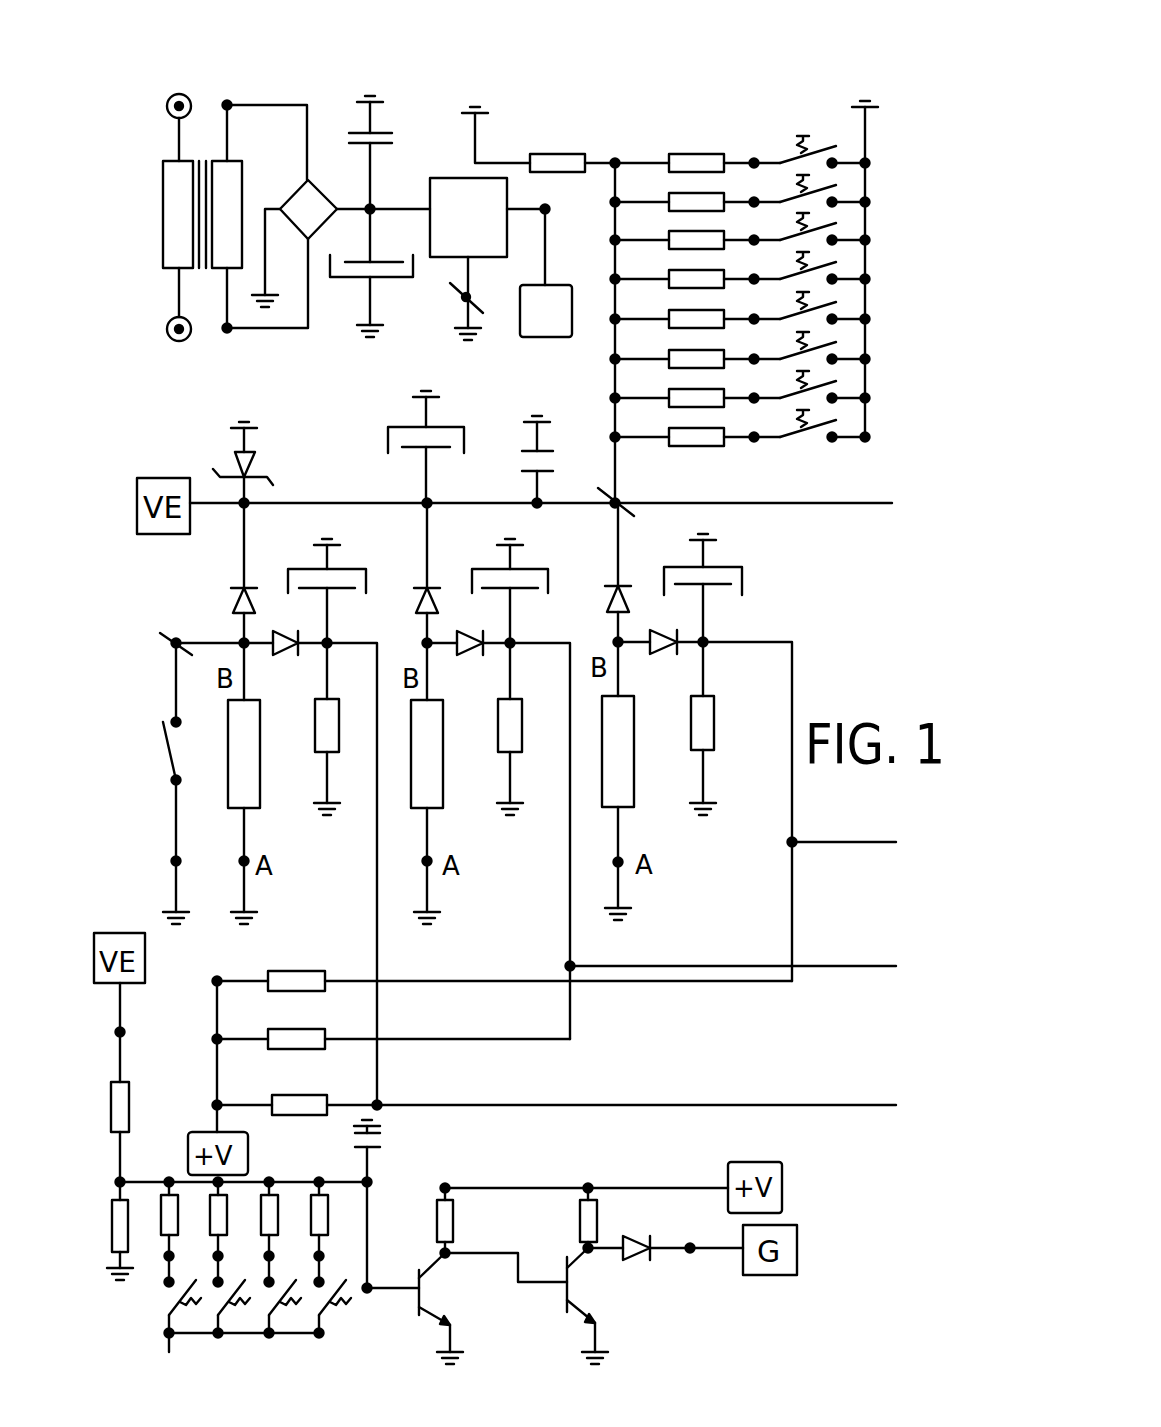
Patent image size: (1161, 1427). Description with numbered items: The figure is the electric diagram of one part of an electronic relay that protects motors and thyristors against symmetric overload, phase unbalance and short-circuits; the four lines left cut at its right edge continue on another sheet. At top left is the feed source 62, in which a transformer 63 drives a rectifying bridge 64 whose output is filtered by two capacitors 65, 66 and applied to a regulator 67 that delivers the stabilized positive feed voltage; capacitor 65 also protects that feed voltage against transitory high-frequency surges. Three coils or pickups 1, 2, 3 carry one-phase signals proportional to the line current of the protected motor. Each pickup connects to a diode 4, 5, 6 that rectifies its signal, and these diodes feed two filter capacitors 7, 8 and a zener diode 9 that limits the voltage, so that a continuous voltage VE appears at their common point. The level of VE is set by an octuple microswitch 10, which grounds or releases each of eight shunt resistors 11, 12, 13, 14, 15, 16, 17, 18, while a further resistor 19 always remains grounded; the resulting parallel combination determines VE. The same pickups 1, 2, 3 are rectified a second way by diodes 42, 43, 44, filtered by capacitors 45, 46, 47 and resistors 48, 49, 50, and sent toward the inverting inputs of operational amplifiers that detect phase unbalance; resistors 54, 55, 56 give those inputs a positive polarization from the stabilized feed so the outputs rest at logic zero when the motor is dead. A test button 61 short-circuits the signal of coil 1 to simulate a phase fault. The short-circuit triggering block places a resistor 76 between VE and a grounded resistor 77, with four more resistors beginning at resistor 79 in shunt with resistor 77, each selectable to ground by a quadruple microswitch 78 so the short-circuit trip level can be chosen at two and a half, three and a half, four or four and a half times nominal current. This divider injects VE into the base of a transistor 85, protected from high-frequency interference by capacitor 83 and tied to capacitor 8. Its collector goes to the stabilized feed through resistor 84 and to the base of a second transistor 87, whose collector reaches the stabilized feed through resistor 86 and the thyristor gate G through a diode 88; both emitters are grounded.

The coil or pickup 1 is at (250, 777).
The coil or pickup 2 is at (434, 777).
The coil or pickup 3 is at (625, 775).
The diode 4 is at (237, 573).
The diode 5 is at (420, 573).
The diode 6 is at (611, 572).
The capacitor 7 is at (426, 447).
The capacitor 8 is at (551, 459).
The zener diode 9 is at (246, 462).
The octuple microswitch 10 is at (822, 124).
The resistor 11 is at (683, 146).
The resistor 12 is at (683, 202).
The resistor 13 is at (683, 240).
The resistor 14 is at (683, 279).
The resistor 15 is at (683, 319).
The resistor 16 is at (683, 359).
The resistor 17 is at (683, 398).
The resistor 18 is at (683, 437).
The resistor 19 is at (538, 139).
The diode 42 is at (285, 661).
The diode 43 is at (468, 661).
The diode 44 is at (660, 658).
The capacitor 45 is at (334, 591).
The capacitor 46 is at (518, 591).
The capacitor 47 is at (712, 588).
The resistor 48 is at (340, 729).
The resistor 49 is at (525, 729).
The resistor 50 is at (717, 728).
The resistor 54 is at (504, 998).
The resistor 55 is at (393, 1056).
The resistor 56 is at (556, 1124).
The test button 61 is at (163, 756).
The feed source 62 is at (338, 88).
The transformer 63 is at (202, 232).
The rectifying bridge 64 is at (308, 209).
The capacitor 65 is at (389, 152).
The capacitor 66 is at (371, 273).
The regulator 67 is at (468, 217).
The resistor 76 is at (138, 1082).
The resistor 77 is at (136, 1231).
The quadruple microswitch 78 is at (160, 1323).
The resistor 79 is at (262, 1234).
The capacitor 83 is at (385, 1204).
The resistor 84 is at (464, 1220).
The transistor 85 is at (441, 1308).
The resistor 86 is at (608, 1218).
The transistor 87 is at (587, 1306).
The diode 88 is at (665, 1262).